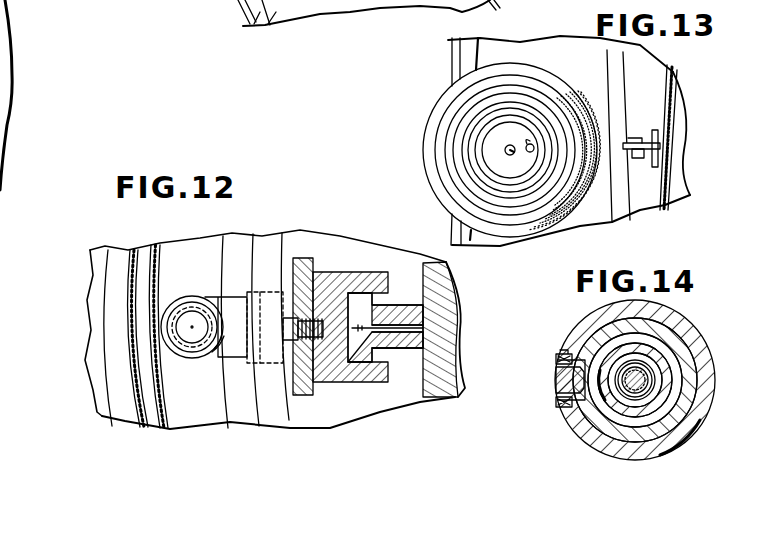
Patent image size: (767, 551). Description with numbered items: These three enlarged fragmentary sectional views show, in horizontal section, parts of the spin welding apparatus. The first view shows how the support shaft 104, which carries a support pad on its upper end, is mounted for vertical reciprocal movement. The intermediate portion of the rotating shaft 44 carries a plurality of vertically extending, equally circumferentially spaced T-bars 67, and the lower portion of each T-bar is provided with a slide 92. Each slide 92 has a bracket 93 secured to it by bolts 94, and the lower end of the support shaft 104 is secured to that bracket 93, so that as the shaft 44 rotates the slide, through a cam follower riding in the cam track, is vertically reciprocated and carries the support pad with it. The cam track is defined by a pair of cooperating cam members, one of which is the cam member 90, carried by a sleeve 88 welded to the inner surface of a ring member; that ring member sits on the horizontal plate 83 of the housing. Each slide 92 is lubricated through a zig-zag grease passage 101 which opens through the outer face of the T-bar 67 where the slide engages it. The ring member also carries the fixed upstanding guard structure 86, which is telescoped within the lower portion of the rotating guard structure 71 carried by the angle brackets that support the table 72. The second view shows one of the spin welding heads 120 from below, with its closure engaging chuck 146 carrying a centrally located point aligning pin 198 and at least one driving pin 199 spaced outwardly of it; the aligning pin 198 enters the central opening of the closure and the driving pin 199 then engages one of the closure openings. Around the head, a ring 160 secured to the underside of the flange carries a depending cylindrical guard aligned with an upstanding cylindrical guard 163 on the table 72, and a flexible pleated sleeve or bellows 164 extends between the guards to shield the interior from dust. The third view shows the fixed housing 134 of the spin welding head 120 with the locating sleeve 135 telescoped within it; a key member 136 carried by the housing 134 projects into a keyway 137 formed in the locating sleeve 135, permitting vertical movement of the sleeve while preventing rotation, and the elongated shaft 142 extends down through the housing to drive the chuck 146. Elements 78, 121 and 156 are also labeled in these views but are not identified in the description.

In FIG. 12, the table 72 is at (344, 13).
In FIG. 12, the flange 78 is at (268, 24).
In FIG. 12, the horizontal plate 83 is at (88, 345).
In FIG. 12, the guard structure 71 is at (140, 252).
In FIG. 12, the upstanding guard structure 86 is at (160, 252).
In FIG. 12, the sleeve 88 is at (240, 250).
In FIG. 12, the cam member 90 is at (275, 243).
In FIG. 12, the slide 92 is at (345, 272).
In FIG. 12, the bolts 94 is at (330, 352).
In FIG. 12, the grease passage 101 is at (392, 328).
In FIG. 12, the T-bars 67 is at (404, 352).
In FIG. 12, the shaft 44 is at (440, 292).
In FIG. 12, the bracket 93 is at (232, 352).
In FIG. 12, the support shaft 104 is at (192, 312).
In FIG. 13, the ring 160 is at (605, 218).
In FIG. 13, the upstanding cylindrical guard 163 is at (672, 88).
In FIG. 13, the flexible pleated sleeve or bellows 164 is at (635, 171).
In FIG. 13, the wall 121 is at (462, 41).
In FIG. 13, the fixed housing 134 is at (440, 151).
In FIG. 14, the fixed housing 134 is at (670, 313).
In FIG. 13, the locating sleeve 135 is at (460, 108).
In FIG. 14, the locating sleeve 135 is at (685, 345).
In FIG. 13, the closure engaging chuck 146 is at (517, 118).
In FIG. 14, the closure engaging chuck 146 is at (602, 345).
In FIG. 13, the driving pin 199 is at (510, 148).
In FIG. 13, the point aligning pin 198 is at (506, 153).
In FIG. 14, the ring 156 is at (620, 388).
In FIG. 14, the elongated shaft 142 is at (640, 379).
In FIG. 14, the spin welding heads 120 is at (555, 351).
In FIG. 14, the keyway 137 is at (556, 360).
In FIG. 14, the key member 136 is at (556, 381).